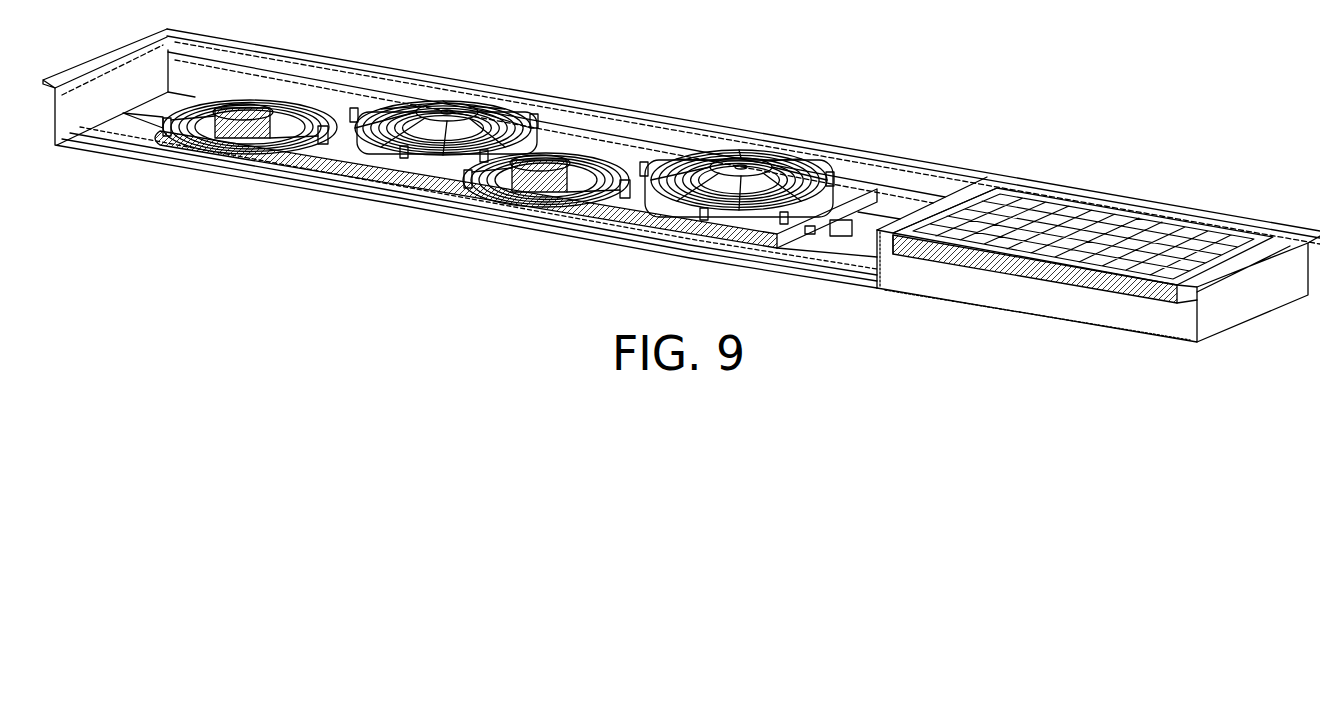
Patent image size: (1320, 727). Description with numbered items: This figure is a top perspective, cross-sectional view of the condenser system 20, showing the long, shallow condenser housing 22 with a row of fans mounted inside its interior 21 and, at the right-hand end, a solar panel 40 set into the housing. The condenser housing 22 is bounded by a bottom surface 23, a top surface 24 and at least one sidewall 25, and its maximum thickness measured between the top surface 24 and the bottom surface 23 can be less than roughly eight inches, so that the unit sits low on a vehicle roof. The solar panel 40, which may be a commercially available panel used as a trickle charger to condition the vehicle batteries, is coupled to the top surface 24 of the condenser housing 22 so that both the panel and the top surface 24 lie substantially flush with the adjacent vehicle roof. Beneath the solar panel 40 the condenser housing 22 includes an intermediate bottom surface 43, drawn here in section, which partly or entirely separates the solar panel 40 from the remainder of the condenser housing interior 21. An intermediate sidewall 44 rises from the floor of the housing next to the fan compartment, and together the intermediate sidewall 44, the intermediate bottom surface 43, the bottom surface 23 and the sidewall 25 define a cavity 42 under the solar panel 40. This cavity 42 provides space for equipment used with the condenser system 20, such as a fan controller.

The condenser system 20 is at (801, 114).
The condenser housing interior 21 is at (893, 203).
The condenser housing 22 is at (720, 132).
The bottom surface 23 is at (1170, 328).
The top surface 24 is at (1283, 237).
The sidewall 25 is at (1250, 300).
The solar panel 40 is at (1080, 217).
The cavity 42 is at (1087, 310).
The intermediate bottom surface 43 is at (1015, 278).
The intermediate sidewall 44 is at (888, 268).